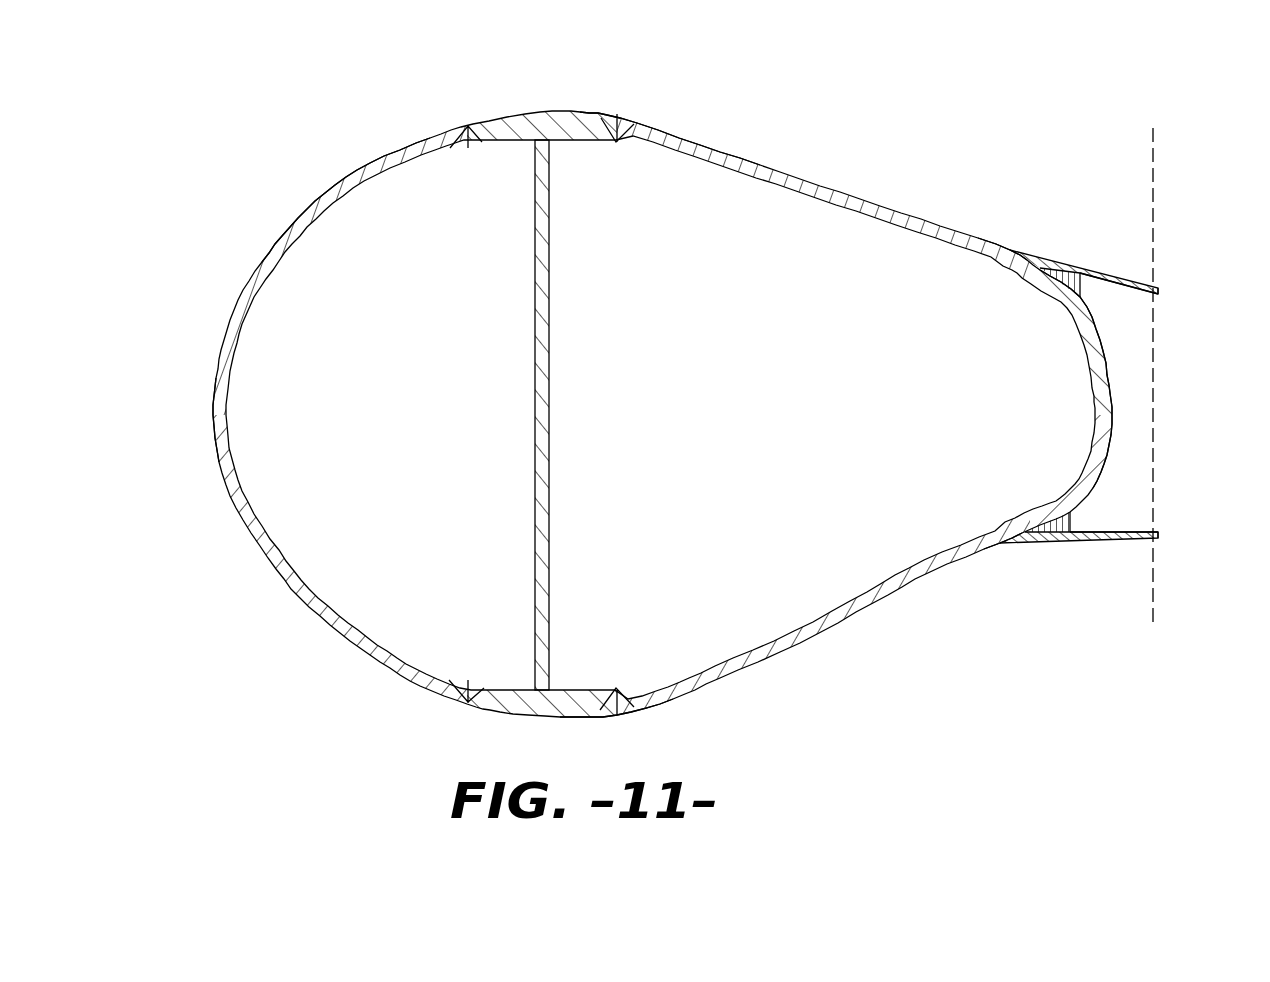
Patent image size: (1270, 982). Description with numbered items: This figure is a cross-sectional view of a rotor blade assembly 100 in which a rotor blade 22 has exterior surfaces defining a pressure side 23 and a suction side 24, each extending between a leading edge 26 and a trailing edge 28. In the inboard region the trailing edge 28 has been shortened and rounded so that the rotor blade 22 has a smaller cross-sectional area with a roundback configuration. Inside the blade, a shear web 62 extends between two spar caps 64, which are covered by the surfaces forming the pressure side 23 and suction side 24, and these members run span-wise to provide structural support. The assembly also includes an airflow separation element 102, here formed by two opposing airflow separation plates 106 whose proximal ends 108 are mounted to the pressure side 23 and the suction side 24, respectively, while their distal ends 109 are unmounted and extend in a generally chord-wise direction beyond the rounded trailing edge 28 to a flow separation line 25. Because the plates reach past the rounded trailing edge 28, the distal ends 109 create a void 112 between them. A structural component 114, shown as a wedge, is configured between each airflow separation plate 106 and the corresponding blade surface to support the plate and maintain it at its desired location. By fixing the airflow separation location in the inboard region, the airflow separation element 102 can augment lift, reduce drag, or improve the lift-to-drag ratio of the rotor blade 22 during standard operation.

The rotor blade assembly 100 is at (918, 130).
The rotor blade 22 is at (366, 158).
The pressure side 23 is at (698, 128).
The suction side 24 is at (707, 683).
The flow separation line 25 is at (1160, 167).
The leading edge 26 is at (212, 420).
The trailing edge 28 is at (1112, 402).
The shear web 62 is at (531, 380).
The spar caps 64 is at (493, 145).
The airflow separation element 102 is at (1091, 255).
The airflow separation plate 106 is at (1127, 270).
The proximal end 108 is at (997, 243).
The distal end 109 is at (1153, 288).
The void 112 is at (1182, 367).
The structural component 114 is at (1080, 287).